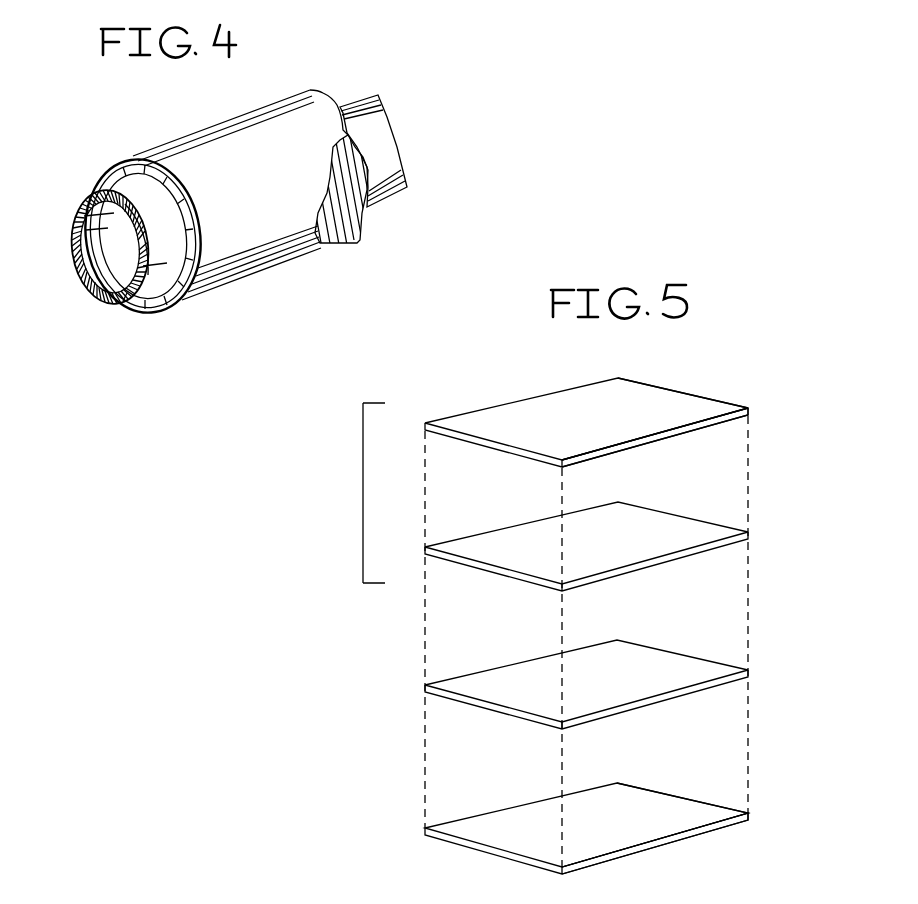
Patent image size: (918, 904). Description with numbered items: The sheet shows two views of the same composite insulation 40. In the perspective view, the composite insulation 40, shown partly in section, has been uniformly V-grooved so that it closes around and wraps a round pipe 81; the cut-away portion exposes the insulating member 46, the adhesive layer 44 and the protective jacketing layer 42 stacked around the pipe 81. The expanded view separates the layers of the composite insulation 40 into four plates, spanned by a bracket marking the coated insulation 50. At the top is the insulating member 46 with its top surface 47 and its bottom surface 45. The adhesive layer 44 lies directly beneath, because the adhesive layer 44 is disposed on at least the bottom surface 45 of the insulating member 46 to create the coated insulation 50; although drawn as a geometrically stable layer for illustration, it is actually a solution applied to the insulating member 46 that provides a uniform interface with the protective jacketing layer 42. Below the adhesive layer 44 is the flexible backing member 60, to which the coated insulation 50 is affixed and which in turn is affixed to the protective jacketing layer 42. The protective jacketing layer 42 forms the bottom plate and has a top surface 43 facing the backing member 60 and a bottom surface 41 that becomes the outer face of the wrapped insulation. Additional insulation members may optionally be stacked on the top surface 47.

In FIG. 4, the composite insulation 40 is at (273, 230).
In FIG. 5, the bottom surface of protective jacketing layer 41 is at (681, 855).
In FIG. 4, the protective jacketing layer 42 is at (203, 232).
In FIG. 5, the protective jacketing layer 42 is at (748, 813).
In FIG. 5, the top surface of protective jacketing layer 43 is at (633, 813).
In FIG. 4, the adhesive layer 44 is at (172, 305).
In FIG. 5, the adhesive layer 44 is at (748, 532).
In FIG. 5, the bottom surface of insulating member 45 is at (701, 440).
In FIG. 4, the insulating member 46 is at (120, 177).
In FIG. 5, the insulating member 46 is at (748, 408).
In FIG. 5, the top surface of insulating member 47 is at (668, 407).
In FIG. 5, the coated insulation 50 is at (530, 635).
In FIG. 5, the flexible backing member 60 is at (748, 670).
In FIG. 4, the round pipe 81 is at (92, 273).